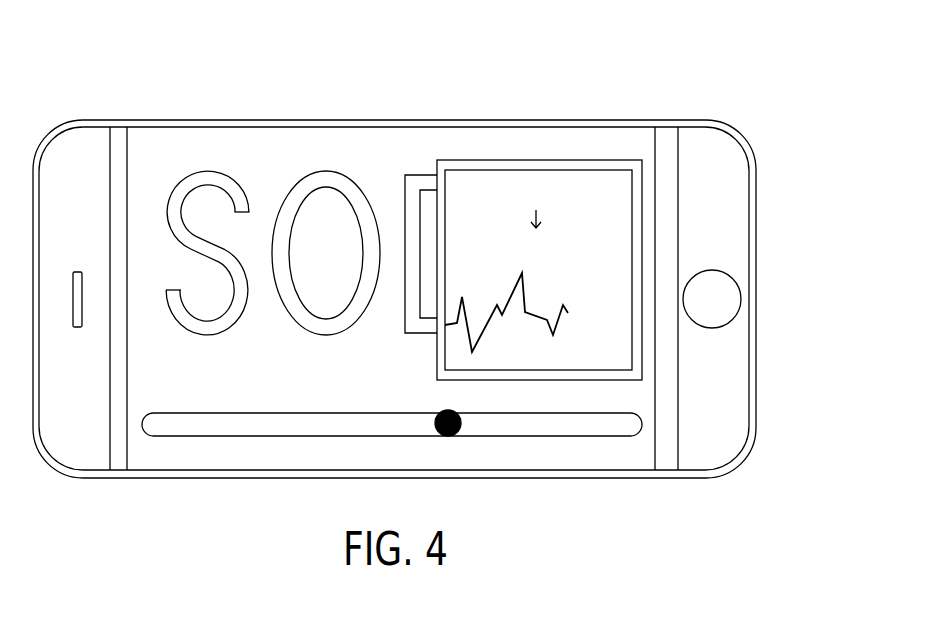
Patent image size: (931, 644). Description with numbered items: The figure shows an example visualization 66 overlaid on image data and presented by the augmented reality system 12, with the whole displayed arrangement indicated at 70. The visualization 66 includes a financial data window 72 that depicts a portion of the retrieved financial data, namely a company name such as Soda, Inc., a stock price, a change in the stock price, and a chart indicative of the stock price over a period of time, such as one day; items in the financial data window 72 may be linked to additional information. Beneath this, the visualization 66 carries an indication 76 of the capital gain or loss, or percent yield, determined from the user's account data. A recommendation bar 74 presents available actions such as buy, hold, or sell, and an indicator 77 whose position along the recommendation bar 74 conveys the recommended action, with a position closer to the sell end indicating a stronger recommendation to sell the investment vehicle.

The augmented reality system 12 is at (740, 462).
The graphical user interface 70 is at (695, 89).
The visualization 66 is at (184, 153).
The financial data window 72 is at (542, 158).
The recommendation bar 74 is at (522, 437).
The indication of capital gain/loss 76 is at (297, 371).
The indicator 77 is at (448, 437).